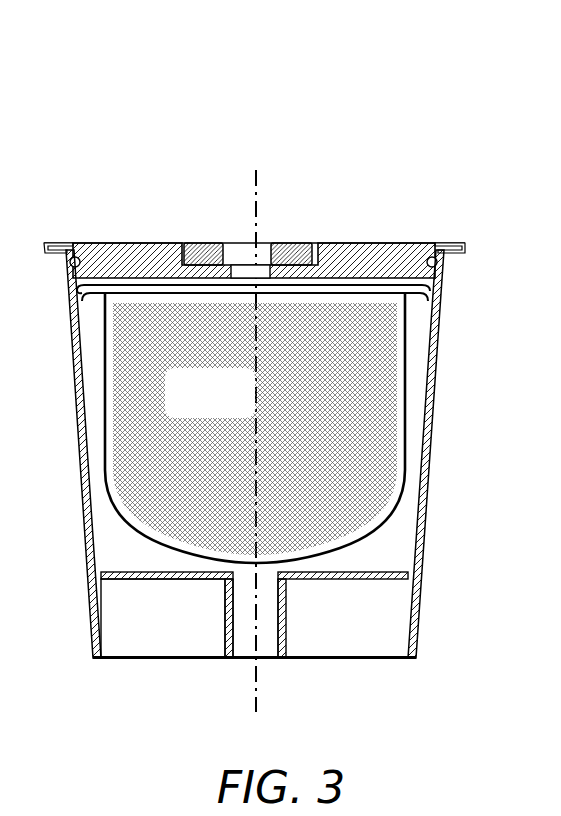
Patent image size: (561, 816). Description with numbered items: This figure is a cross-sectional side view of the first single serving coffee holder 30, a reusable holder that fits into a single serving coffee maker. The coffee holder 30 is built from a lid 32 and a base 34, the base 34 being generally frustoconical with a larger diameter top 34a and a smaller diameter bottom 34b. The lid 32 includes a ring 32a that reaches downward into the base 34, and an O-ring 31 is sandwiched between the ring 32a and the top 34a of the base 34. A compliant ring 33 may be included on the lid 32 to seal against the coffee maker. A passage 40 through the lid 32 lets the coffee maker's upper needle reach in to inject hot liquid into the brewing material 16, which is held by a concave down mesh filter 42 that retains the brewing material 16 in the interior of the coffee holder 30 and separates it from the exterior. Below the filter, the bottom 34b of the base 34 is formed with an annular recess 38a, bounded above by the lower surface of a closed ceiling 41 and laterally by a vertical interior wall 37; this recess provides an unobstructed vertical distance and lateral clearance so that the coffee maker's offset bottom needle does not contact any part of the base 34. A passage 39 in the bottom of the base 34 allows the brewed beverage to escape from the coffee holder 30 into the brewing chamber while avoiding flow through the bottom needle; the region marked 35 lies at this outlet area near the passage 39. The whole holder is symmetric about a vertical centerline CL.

The brewing material 16 is at (255, 429).
The single serving coffee holder 30 is at (205, 185).
The O-ring 31 is at (447, 260).
The lid 32 is at (363, 255).
The ring 32a is at (442, 272).
The compliant ring 33 is at (197, 244).
The base 34 is at (427, 453).
The top 34a is at (440, 283).
The bottom 34b is at (415, 650).
The outlet 35 is at (288, 658).
The vertical interior wall 37 is at (288, 605).
The annular recess 38a is at (151, 640).
The passage 39 is at (268, 643).
The passage 40 is at (260, 276).
The closed ceiling 41 is at (355, 579).
The mesh filter 42 is at (405, 488).
The vertical centerline CL is at (253, 685).